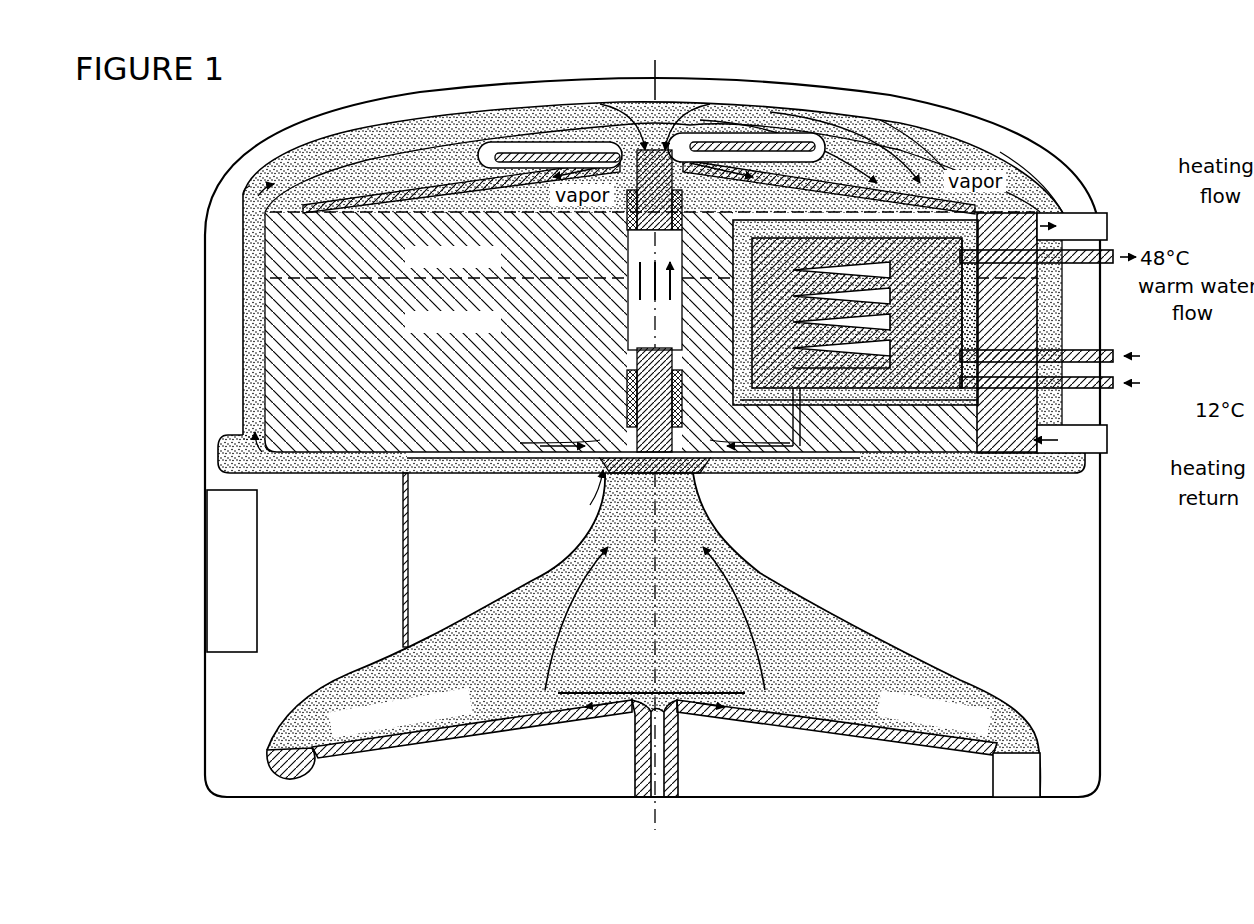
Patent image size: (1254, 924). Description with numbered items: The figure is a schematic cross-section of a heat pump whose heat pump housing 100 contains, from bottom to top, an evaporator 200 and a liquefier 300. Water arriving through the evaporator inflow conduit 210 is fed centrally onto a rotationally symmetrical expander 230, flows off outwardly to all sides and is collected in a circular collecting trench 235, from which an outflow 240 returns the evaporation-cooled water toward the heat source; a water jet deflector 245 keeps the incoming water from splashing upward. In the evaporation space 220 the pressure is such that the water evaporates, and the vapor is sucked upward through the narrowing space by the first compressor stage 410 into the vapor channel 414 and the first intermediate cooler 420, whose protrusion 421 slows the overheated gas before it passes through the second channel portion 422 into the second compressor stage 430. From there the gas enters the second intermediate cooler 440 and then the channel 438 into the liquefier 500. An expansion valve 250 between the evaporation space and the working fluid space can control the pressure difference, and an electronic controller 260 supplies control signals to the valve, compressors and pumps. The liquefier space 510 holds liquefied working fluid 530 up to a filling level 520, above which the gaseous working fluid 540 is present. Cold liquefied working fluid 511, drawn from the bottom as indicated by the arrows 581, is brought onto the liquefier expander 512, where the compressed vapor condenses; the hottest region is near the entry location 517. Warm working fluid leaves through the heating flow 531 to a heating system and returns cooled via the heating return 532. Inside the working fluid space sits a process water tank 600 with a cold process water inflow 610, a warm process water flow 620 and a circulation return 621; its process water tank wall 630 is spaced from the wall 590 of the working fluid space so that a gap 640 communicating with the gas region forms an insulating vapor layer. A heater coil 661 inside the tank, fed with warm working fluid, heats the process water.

The heat pump housing 100 is at (1100, 717).
The evaporator 200 is at (763, 572).
The evaporator inflow conduit 210 is at (668, 752).
The evaporation space 220 is at (807, 610).
The expander 230 is at (778, 725).
The collecting trench 235 is at (263, 757).
The outflow 240 is at (1037, 773).
The water jet deflector 245 is at (697, 690).
The expansion valve 250 is at (408, 573).
The electronic controller 260 is at (257, 571).
The liquefier 300 is at (243, 313).
The first compressor stage 410 is at (631, 493).
The vapor channel 414 is at (500, 460).
The first intermediate cooler 420 is at (283, 475).
The protrusion 421 is at (220, 462).
The second channel portion 422 is at (243, 360).
The second compressor stage 430 is at (637, 160).
The channel 438 is at (900, 147).
The second intermediate cooler 440 is at (800, 148).
The liquefier 500 is at (1020, 198).
The liquefier space 510 is at (255, 180).
The cold liquefied working fluid 511 is at (935, 200).
The expander 512 is at (850, 163).
The entry location 517 is at (1060, 205).
The filling level 520 is at (360, 203).
The liquefied working fluid 530 is at (287, 240).
The heating flow 531 is at (1105, 216).
The heating return 532 is at (1108, 444).
The gaseous working fluid 540 is at (403, 153).
The arrows 581 is at (533, 463).
The wall of the working fluid space 590 is at (793, 446).
The process water tank 600 is at (905, 405).
The process water inflow 610 is at (1086, 399).
The process water flow 620 is at (1033, 333).
The circulation return 621 is at (1120, 355).
The process water tank wall 630 is at (867, 407).
The gap 640 is at (955, 407).
The heater coil 661 is at (890, 318).